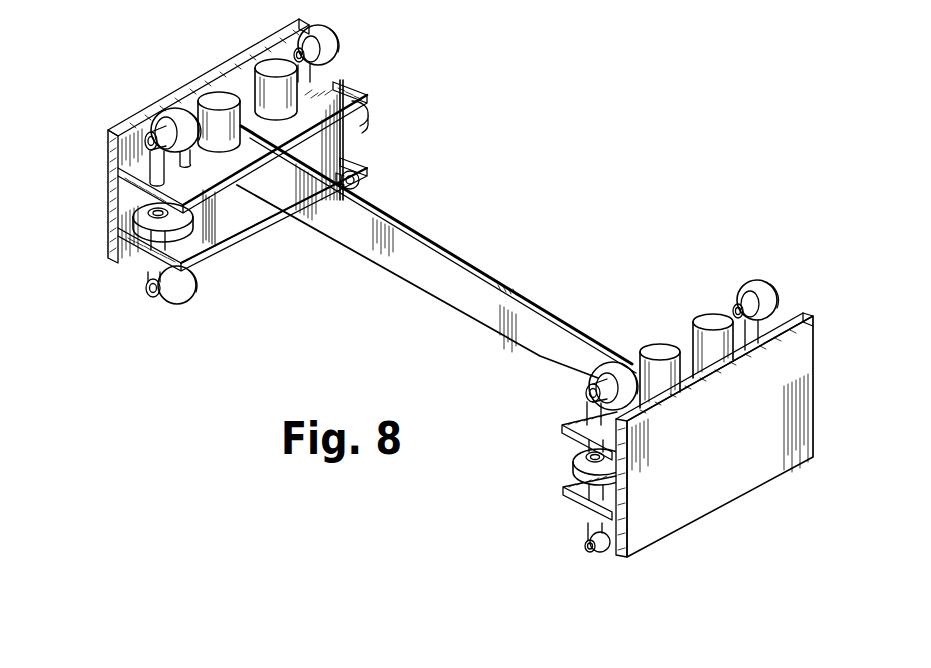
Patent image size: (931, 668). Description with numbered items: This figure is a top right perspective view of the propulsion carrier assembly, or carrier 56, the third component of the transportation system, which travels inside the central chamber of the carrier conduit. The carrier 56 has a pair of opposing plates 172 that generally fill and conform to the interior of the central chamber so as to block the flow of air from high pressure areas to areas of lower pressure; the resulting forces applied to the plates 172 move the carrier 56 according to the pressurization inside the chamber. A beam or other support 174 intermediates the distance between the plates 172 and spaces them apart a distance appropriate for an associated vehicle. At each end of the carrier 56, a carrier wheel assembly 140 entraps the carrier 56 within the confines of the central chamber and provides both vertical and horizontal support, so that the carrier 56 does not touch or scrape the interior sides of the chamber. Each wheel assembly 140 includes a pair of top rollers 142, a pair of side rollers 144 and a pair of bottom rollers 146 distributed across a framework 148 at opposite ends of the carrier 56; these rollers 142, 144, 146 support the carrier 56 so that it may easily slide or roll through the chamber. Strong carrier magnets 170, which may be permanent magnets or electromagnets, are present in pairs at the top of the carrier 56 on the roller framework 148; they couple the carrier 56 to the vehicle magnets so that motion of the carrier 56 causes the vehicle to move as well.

The propulsion carrier assembly 56 is at (540, 188).
The carrier wheel assembly 140 is at (127, 306).
The top rollers 142 is at (165, 108).
The side rollers 144 is at (138, 226).
The bottom rollers 146 is at (180, 288).
The framework 148 is at (240, 241).
The carrier magnets 170 is at (281, 66).
The opposing plates 172 is at (113, 160).
The beam 174 is at (430, 277).